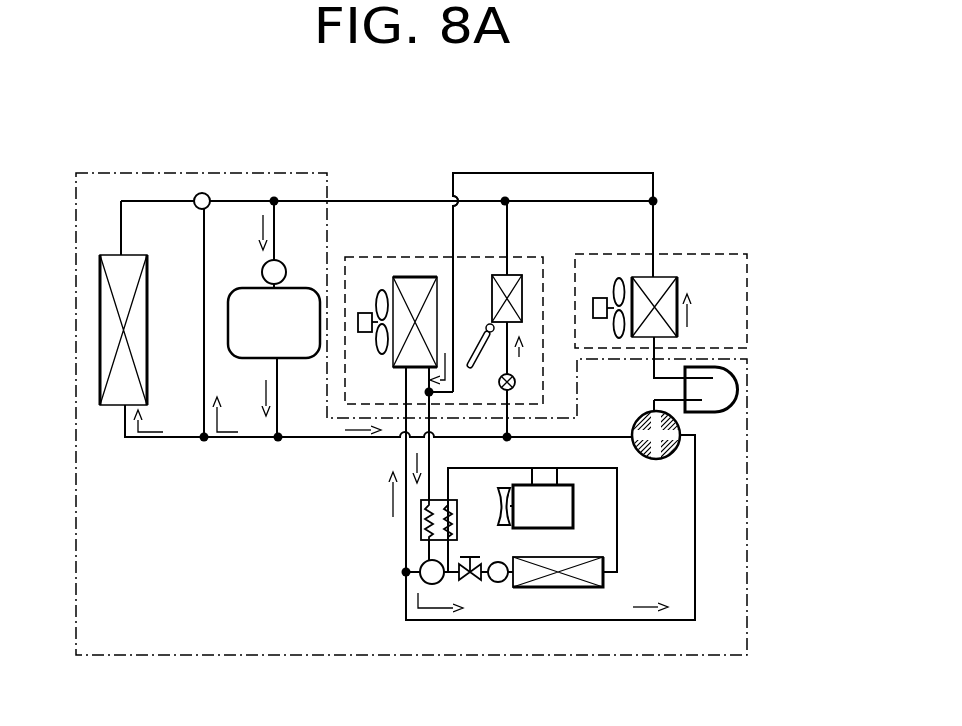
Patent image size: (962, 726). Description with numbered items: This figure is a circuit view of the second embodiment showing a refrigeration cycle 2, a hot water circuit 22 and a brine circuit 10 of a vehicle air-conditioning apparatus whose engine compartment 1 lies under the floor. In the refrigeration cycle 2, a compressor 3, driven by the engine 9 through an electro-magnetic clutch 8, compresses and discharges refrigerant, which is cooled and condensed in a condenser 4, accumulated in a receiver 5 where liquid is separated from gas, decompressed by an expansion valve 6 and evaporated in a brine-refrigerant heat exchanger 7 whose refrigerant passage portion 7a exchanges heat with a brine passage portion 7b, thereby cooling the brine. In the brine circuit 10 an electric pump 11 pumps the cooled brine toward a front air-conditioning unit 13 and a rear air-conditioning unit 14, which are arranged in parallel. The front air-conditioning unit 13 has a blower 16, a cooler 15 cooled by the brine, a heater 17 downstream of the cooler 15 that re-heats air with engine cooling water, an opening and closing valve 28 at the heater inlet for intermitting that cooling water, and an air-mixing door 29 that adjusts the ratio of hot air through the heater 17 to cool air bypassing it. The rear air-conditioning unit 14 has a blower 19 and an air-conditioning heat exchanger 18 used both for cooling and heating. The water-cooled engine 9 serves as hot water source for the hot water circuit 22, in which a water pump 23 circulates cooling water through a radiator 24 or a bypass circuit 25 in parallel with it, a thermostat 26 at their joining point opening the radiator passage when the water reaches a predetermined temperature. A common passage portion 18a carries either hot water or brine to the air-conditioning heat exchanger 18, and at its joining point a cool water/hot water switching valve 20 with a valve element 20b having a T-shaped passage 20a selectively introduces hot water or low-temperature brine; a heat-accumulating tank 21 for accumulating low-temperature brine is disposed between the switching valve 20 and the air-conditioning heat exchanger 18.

The engine compartment 1 is at (62, 270).
The refrigeration cycle 2 is at (637, 535).
The compressor 3 is at (565, 513).
The condenser 4 is at (562, 588).
The receiver 5 is at (496, 583).
The expansion valve 6 is at (465, 583).
The brine-refrigerant heat exchanger 7 is at (421, 531).
The refrigerant passage portion 7a is at (457, 527).
The brine passage portion 7b is at (421, 517).
The electro-magnetic clutch 8 is at (505, 489).
The engine 9 is at (300, 288).
The brine circuit 10 is at (390, 457).
The electric pump 11 is at (406, 578).
The front air-conditioning unit 13 is at (376, 257).
The rear air-conditioning unit 14 is at (722, 254).
The cooler 15 is at (413, 277).
The blower 16 is at (382, 321).
The heater 17 is at (520, 275).
The air-conditioning heat exchanger 18 is at (677, 285).
The common passage portion 18a is at (657, 228).
The blower 19 is at (616, 279).
The cool water/hot water switching valve 20 is at (692, 432).
The passage 20a is at (662, 459).
The valve element (rotor) 20b is at (642, 457).
The heat-accumulating tank 21 is at (737, 389).
The hot water circuit 22 is at (211, 189).
The water pump 23 is at (263, 266).
The radiator 24 is at (100, 352).
The bypass circuit 25 is at (204, 357).
The thermostat 26 is at (196, 196).
The opening and closing valve 28 is at (515, 382).
The air-mixing door 29 is at (488, 325).